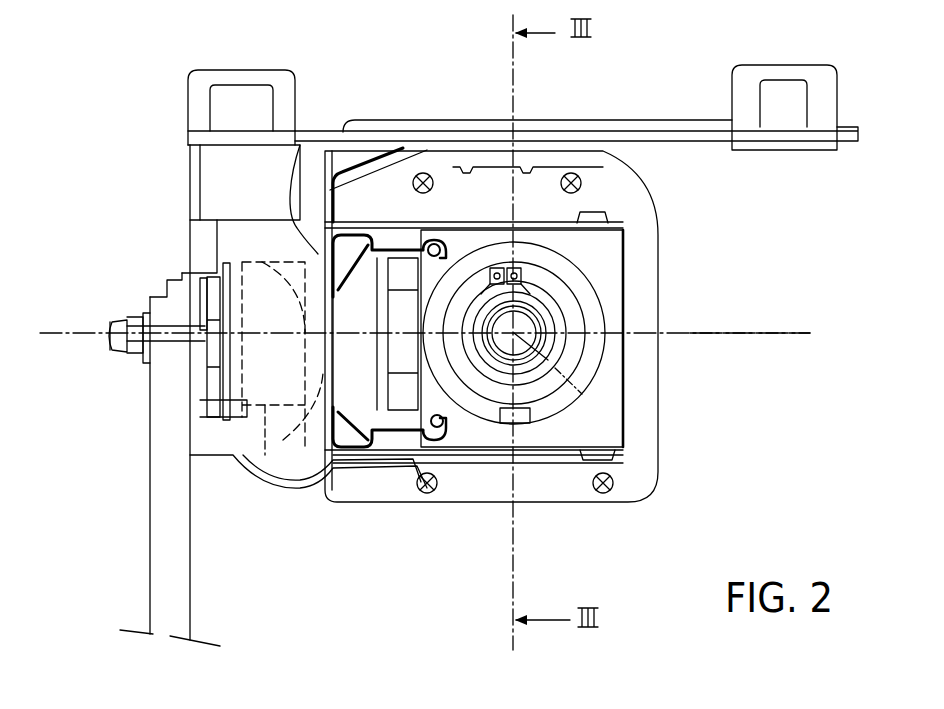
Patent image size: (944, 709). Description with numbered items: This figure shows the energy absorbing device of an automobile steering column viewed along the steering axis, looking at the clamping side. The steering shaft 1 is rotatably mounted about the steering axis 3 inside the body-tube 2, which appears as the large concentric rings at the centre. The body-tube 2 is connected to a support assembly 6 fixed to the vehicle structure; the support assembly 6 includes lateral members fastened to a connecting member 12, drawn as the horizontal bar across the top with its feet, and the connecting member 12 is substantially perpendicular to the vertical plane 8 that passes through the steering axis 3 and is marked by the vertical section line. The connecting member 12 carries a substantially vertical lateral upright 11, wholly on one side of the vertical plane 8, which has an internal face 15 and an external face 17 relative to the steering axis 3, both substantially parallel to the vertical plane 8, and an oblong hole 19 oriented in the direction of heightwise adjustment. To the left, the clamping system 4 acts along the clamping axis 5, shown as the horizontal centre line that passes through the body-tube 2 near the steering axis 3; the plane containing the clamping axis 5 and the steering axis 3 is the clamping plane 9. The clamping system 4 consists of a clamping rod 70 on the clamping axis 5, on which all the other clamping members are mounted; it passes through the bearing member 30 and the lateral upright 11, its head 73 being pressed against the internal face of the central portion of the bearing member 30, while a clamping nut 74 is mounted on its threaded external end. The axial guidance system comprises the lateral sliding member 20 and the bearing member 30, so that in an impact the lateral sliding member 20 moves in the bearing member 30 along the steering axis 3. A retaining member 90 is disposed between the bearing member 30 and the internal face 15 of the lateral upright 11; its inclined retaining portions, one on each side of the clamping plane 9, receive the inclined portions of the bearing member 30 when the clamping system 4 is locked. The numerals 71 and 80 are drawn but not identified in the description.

The steering shaft 1 is at (547, 305).
The body-tube 2 is at (600, 357).
The steering axis 3 is at (548, 362).
The clamping system 4 is at (142, 401).
The clamping axis 5 is at (62, 335).
The support assembly 6 is at (188, 165).
The vertical plane 8 is at (516, 108).
The clamping plane 9 is at (776, 331).
The lateral upright 11 is at (328, 152).
The connecting member 12 is at (632, 130).
The internal face 15 is at (353, 297).
The external face 17 is at (296, 460).
The oblong hole 19 is at (240, 258).
The lateral sliding member 20 is at (490, 425).
The bearing member 30 is at (419, 231).
The clamping rod 70 is at (113, 330).
The clamp band 71 is at (267, 457).
The head 73 is at (385, 405).
The clamping nut 74 is at (130, 357).
The plate part 80 is at (205, 421).
The retaining member 90 is at (320, 256).